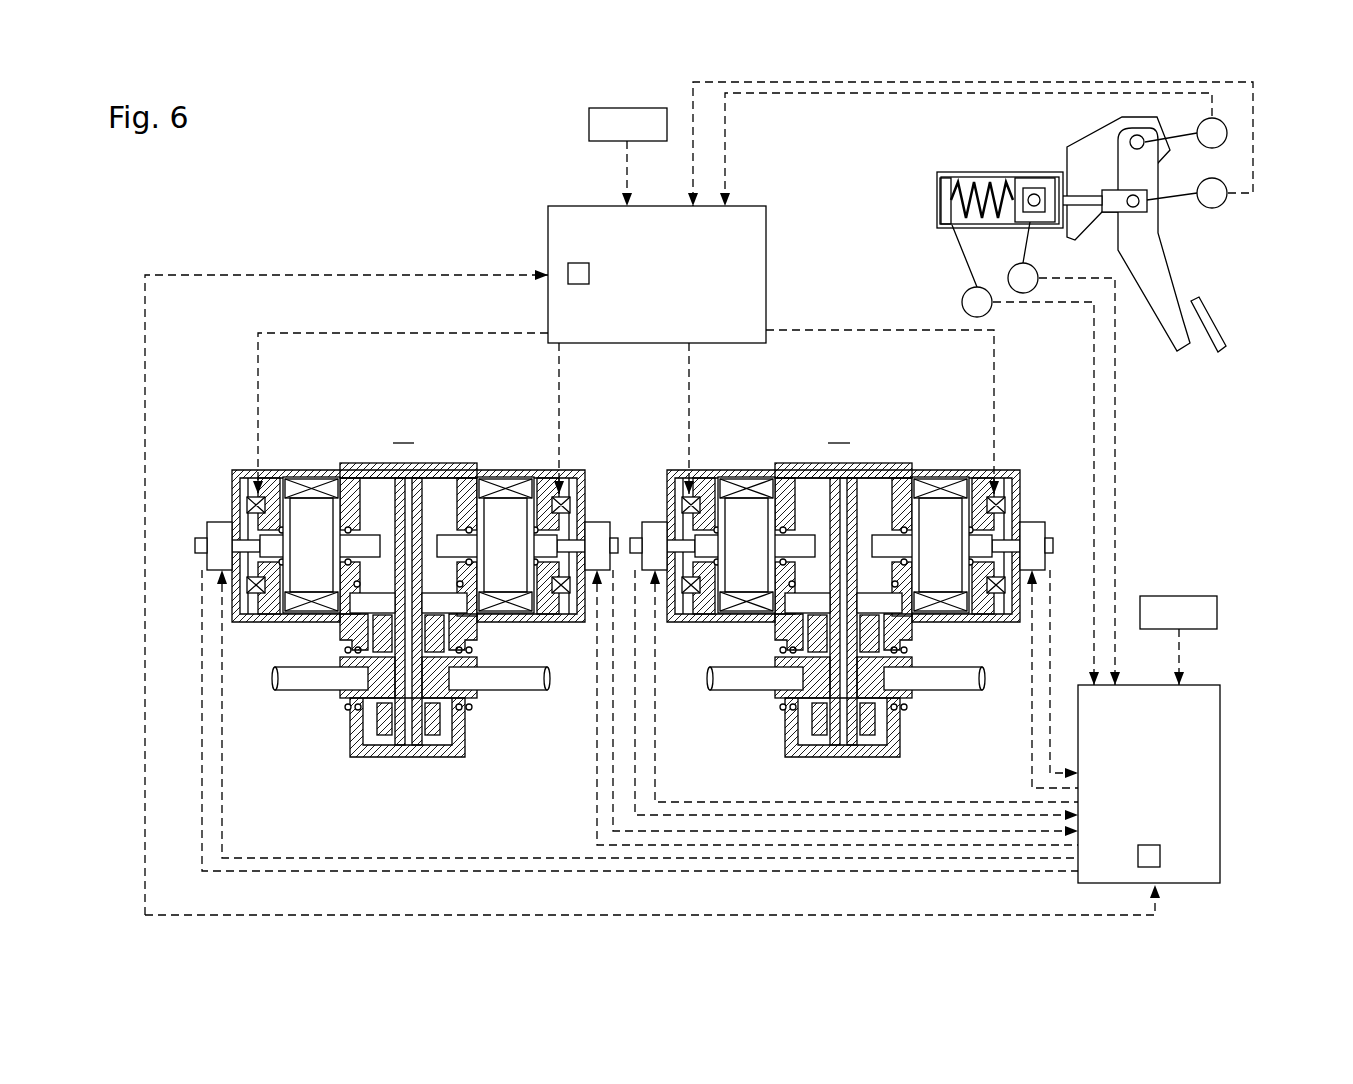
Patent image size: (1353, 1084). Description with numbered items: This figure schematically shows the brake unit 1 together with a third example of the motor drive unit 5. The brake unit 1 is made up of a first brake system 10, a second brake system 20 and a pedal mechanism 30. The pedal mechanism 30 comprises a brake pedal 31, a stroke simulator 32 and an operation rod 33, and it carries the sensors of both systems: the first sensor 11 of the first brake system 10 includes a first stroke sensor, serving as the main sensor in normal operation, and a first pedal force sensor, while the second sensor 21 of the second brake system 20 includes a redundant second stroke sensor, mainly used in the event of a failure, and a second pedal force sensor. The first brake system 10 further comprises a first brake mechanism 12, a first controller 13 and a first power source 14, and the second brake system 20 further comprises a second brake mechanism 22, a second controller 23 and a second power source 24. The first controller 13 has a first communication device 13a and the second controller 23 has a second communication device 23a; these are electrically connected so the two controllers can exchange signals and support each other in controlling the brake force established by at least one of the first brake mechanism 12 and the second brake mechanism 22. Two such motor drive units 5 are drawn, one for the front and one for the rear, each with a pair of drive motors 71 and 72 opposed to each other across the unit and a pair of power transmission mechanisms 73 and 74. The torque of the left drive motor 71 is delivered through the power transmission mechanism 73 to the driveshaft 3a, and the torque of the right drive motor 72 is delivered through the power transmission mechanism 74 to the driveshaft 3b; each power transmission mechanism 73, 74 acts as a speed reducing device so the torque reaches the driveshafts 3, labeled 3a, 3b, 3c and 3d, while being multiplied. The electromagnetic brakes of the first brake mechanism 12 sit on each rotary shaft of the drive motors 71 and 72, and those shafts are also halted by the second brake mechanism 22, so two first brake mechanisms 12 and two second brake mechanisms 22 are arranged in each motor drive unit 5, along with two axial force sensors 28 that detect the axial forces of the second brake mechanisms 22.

The brake unit 1 is at (237, 205).
The driveshaft 3 is at (621, 705).
The driveshaft 3a is at (290, 690).
The driveshaft 3b is at (514, 686).
The rear left axle 3c is at (738, 686).
The rear right axle 3d is at (955, 686).
The motor drive unit 5 is at (483, 434).
The first brake system 10 is at (625, 547).
The first sensor 11 is at (1226, 205).
The first brake mechanism 12 is at (226, 466).
The first controller 13 is at (626, 274).
The first communication device 13a is at (578, 286).
The first power source 14 is at (589, 130).
The second brake system 20 is at (584, 448).
The second sensor 21 is at (960, 285).
The second brake mechanism 22 is at (596, 500).
The second controller 23 is at (1178, 784).
The second communication device 23a is at (1160, 856).
The second power source 24 is at (1217, 612).
The axial force sensor 28 is at (205, 538).
The pedal mechanism 30 is at (1099, 230).
The brake pedal 31 is at (1180, 264).
The stroke simulator 32 is at (997, 155).
The operation rod 33 is at (1084, 203).
The drive motor 71 is at (310, 505).
The drive motor 72 is at (507, 505).
The power transmission mechanism 73 is at (331, 631).
The power transmission mechanism 74 is at (487, 633).